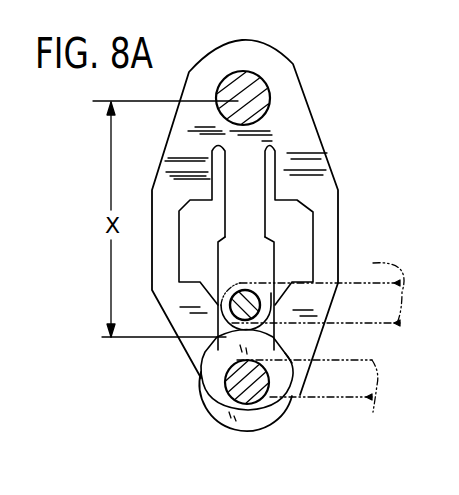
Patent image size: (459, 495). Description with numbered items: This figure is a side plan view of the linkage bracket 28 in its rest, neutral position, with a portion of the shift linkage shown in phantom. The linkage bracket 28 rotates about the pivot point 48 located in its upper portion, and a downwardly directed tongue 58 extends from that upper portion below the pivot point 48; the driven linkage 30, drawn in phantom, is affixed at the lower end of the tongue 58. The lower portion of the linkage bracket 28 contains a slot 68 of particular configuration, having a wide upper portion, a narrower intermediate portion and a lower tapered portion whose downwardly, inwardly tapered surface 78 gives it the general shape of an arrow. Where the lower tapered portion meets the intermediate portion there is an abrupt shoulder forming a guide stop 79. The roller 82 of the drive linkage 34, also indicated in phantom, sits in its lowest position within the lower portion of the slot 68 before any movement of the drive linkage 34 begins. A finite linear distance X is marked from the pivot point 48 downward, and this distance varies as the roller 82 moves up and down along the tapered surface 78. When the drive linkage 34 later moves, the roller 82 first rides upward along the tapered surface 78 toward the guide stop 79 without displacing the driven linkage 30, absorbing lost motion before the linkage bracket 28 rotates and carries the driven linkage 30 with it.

The linkage bracket 28 is at (317, 127).
The pivot point 48 is at (247, 83).
The slot 68 is at (292, 215).
The tongue 58 is at (265, 257).
The driven linkage 30 is at (362, 293).
The drive linkage 34 is at (318, 397).
The inwardly tapered surface 78 is at (290, 390).
The guide stop 79 is at (290, 361).
The roller 82 is at (260, 420).